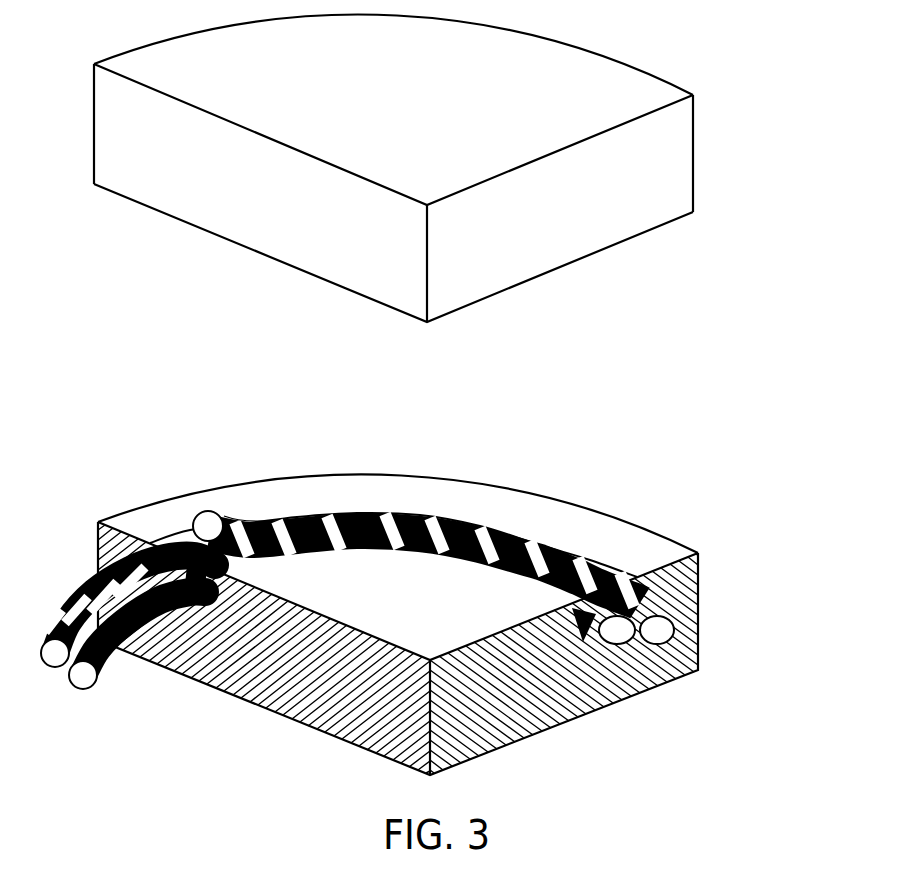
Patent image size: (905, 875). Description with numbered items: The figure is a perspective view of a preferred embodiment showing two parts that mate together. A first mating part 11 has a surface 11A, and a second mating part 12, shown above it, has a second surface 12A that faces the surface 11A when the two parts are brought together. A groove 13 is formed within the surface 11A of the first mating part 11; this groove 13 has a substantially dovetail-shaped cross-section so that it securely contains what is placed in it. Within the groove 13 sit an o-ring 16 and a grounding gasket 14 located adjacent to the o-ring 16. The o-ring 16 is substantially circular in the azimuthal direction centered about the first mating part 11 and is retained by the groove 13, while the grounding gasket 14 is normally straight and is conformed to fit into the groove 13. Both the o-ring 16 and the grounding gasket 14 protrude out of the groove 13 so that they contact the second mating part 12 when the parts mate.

The first mating part 11 is at (592, 510).
The surface 11A is at (461, 623).
The second mating part 12 is at (695, 150).
The second surface 12A is at (592, 257).
The groove 13 is at (427, 517).
The grounding gasket 14 is at (297, 528).
The o-ring 16 is at (617, 647).